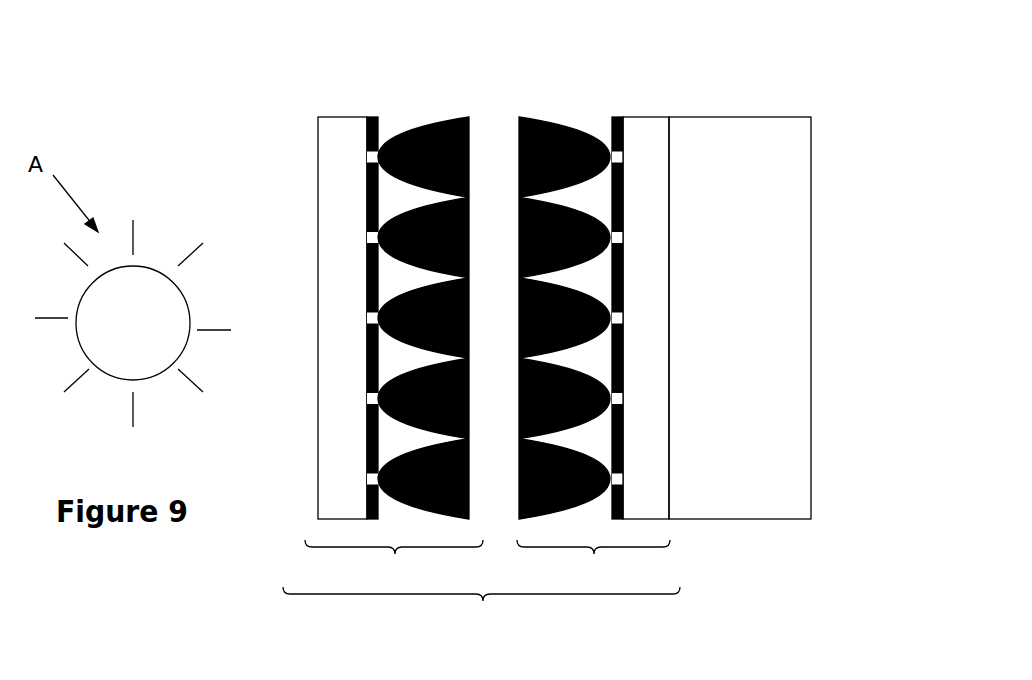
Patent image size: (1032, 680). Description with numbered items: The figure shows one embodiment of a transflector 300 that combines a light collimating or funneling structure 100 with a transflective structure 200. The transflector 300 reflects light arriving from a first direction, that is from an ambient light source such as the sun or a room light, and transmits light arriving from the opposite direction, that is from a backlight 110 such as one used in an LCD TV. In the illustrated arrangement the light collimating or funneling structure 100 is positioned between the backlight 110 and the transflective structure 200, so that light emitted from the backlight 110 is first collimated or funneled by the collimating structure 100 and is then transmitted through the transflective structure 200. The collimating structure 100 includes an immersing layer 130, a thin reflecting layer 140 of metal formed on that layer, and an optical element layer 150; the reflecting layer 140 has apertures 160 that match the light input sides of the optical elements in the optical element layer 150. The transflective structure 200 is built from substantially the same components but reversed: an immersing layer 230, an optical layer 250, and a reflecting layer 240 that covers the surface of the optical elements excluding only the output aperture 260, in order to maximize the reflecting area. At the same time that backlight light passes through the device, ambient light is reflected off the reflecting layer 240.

The light collimating or funneling structure 100 is at (593, 564).
The backlight 110 is at (811, 157).
The immersing layer 130 is at (645, 117).
The reflecting layer 140 is at (615, 117).
The optical element layer 150 is at (528, 117).
The apertures 160 is at (623, 478).
The transflective structure 200 is at (394, 564).
The immersing layer 230 is at (318, 150).
The reflecting layer 240 is at (376, 117).
The optical layer 250 is at (468, 117).
The output aperture 260 is at (367, 478).
The transflector 300 is at (481, 610).